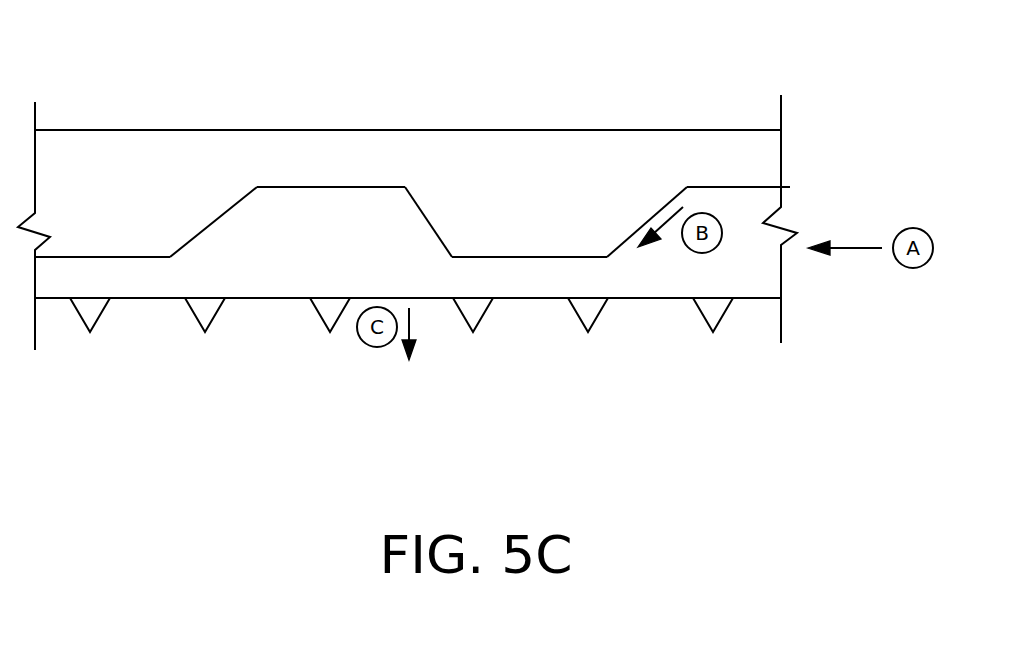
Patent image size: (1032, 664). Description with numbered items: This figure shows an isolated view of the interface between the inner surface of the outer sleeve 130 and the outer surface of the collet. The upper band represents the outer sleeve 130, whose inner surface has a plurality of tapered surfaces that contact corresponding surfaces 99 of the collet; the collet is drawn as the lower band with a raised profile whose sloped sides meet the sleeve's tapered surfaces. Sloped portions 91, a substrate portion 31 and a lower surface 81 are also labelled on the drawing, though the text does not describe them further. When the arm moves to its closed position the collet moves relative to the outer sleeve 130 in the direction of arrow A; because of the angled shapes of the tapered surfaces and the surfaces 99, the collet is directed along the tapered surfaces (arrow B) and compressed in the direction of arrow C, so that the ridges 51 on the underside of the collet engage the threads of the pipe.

The outer sleeve 130 is at (83, 157).
The sloped sidewall 91 is at (200, 232).
The surfaces of the collet 99 is at (678, 192).
The substrate 31 is at (145, 285).
The bottom surface 81 is at (538, 285).
The ridges 51 is at (79, 318).